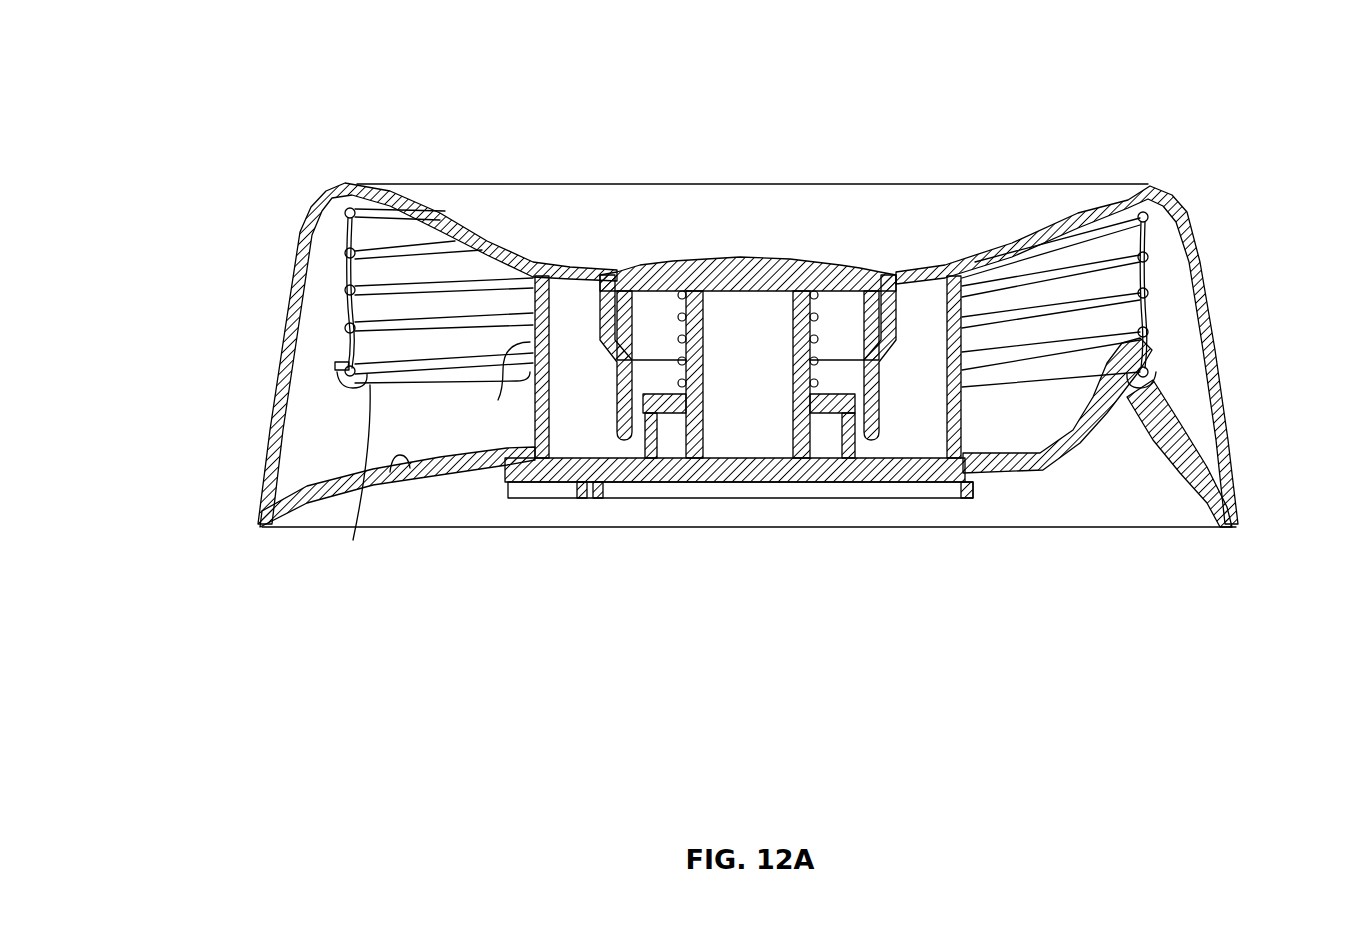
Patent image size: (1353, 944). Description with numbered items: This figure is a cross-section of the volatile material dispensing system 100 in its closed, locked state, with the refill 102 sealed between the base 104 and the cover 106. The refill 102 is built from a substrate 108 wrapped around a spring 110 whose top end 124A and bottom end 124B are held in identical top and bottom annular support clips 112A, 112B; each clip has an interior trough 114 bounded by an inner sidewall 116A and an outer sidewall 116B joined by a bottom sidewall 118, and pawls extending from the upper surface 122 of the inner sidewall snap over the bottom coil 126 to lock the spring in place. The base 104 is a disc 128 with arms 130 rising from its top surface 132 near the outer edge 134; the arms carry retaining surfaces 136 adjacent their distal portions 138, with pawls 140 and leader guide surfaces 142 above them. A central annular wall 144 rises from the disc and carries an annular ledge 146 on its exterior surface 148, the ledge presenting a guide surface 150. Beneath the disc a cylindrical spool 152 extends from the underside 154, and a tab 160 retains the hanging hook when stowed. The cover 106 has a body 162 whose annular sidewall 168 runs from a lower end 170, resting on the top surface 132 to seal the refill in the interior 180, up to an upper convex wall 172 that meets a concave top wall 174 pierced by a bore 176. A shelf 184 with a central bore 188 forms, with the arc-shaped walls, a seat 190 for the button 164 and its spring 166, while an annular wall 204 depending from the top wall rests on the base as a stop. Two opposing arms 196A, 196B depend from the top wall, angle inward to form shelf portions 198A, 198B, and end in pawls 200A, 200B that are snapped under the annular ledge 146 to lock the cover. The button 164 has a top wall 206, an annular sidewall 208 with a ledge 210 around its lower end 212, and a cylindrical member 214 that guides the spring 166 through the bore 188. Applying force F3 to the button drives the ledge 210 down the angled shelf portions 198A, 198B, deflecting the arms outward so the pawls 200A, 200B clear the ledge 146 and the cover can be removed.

The volatile material dispensing system 100 is at (316, 56).
The volatile material dispensing refill 102 is at (1186, 210).
The base 104 is at (1235, 460).
The cover 106 is at (1180, 207).
The substrate 108 is at (340, 247).
The spring 110 is at (352, 233).
The top annular support clip 112A is at (1150, 186).
The bottom annular support clip 112B is at (1150, 366).
The interior trough 114 is at (336, 366).
The inner sidewall 116A is at (357, 500).
The outer sidewall 116B is at (335, 374).
The bottom sidewall 118 is at (343, 382).
The upper surface 122 is at (1112, 362).
The top end 124A is at (343, 211).
The bottom end 124B is at (340, 362).
The bottom coil 126 is at (340, 352).
The disc 128 is at (310, 526).
The arms 130 is at (1195, 448).
The top surface 132 is at (408, 482).
The outer edge 134 is at (258, 523).
The retaining surfaces 136 is at (1160, 373).
The distal portions 138 is at (1170, 246).
The pawls 140 is at (1105, 352).
The leader guide surfaces 142 is at (1150, 325).
The annular wall 144 is at (647, 412).
The annular ledge 146 is at (642, 384).
The exterior surface 148 is at (620, 440).
The guide surface 150 is at (540, 430).
The cylindrical spool 152 is at (977, 487).
The underside 154 is at (1047, 473).
The tab 160 is at (568, 486).
The body 162 is at (1040, 232).
The button 164 is at (818, 290).
The spring 166 is at (690, 262).
The annular sidewall 168 is at (1230, 413).
The lower end 170 is at (1236, 526).
The upper convex wall 172 is at (1138, 196).
The concave top wall 174 is at (930, 280).
The bore 176 is at (624, 262).
The interior 180 is at (1083, 473).
The shelf 184 is at (893, 385).
The bore 188 is at (812, 396).
The seat 190 is at (507, 385).
The first opposing arm 196A is at (603, 284).
The second opposing arm 196B is at (893, 350).
The first shelf portion 198A is at (600, 350).
The second shelf portion 198B is at (920, 385).
The first pawl 200A is at (583, 498).
The second pawl 200B is at (885, 395).
The annular wall 204 is at (1067, 440).
The top wall 206 is at (787, 260).
The annular sidewall 208 is at (684, 262).
The ledge 210 is at (600, 288).
The lower end 212 is at (832, 438).
The cylindrical member 214 is at (670, 458).
The force F3 is at (765, 212).